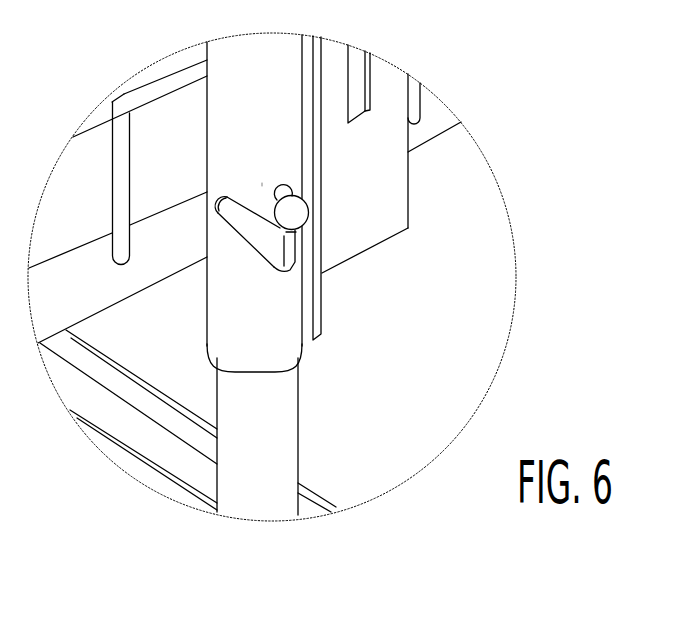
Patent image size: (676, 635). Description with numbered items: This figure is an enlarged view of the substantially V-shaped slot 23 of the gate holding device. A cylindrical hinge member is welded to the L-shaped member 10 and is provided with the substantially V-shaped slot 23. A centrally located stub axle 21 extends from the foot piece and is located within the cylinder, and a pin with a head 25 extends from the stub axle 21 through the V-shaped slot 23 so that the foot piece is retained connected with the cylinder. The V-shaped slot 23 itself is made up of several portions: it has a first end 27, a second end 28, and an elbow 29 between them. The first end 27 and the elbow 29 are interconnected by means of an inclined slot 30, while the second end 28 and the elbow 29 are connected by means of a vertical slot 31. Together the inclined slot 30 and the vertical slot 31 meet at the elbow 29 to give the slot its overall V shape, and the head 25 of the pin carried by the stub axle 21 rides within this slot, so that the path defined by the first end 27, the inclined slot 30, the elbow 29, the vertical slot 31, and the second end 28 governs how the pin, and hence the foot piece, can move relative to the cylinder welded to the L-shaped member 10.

The L-shaped member 10 is at (407, 191).
The stub axle 21 is at (287, 443).
The substantially V-shaped slot 23 is at (262, 176).
The head 25 is at (300, 213).
The first end 27 is at (214, 205).
The second end 28 is at (284, 190).
The elbow 29 is at (288, 276).
The inclined slot 30 is at (242, 250).
The vertical slot 31 is at (293, 239).